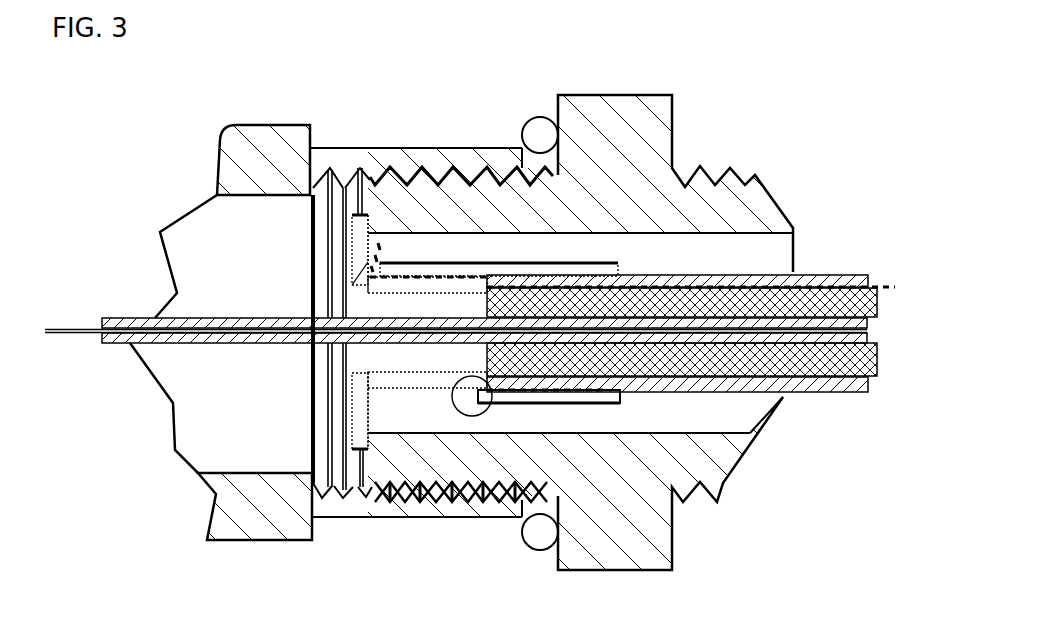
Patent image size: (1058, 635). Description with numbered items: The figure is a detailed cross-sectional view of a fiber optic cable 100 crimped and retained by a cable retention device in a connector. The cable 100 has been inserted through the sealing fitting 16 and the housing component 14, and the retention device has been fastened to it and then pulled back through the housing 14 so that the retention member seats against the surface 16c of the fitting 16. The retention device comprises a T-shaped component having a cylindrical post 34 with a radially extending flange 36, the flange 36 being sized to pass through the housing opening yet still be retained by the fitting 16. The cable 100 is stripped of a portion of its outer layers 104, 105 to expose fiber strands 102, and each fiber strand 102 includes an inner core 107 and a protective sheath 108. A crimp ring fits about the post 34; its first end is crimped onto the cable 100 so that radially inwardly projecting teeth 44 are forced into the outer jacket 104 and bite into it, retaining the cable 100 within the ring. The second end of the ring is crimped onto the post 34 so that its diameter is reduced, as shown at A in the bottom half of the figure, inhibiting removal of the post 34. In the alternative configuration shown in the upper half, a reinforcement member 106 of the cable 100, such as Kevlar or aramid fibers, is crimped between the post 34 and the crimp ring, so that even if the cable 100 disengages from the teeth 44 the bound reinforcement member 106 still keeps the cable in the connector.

The housing component 14 is at (253, 155).
The sealing fitting 16 is at (648, 153).
The surface of the fitting 16c is at (372, 217).
The cylindrical post 34 is at (458, 287).
The radially extending flange 36 is at (360, 240).
The radially inwardly projecting tooth 44 is at (620, 393).
The fiber optic cable 100 is at (483, 313).
The fiber strands 102 is at (197, 353).
The outer jacket 104 is at (802, 283).
The outer layer 105 is at (810, 303).
The reinforcement member 106 is at (888, 287).
The inner core 107 is at (67, 330).
The protective sheath 108 is at (130, 325).
The crimp ring/post configuration A is at (470, 410).